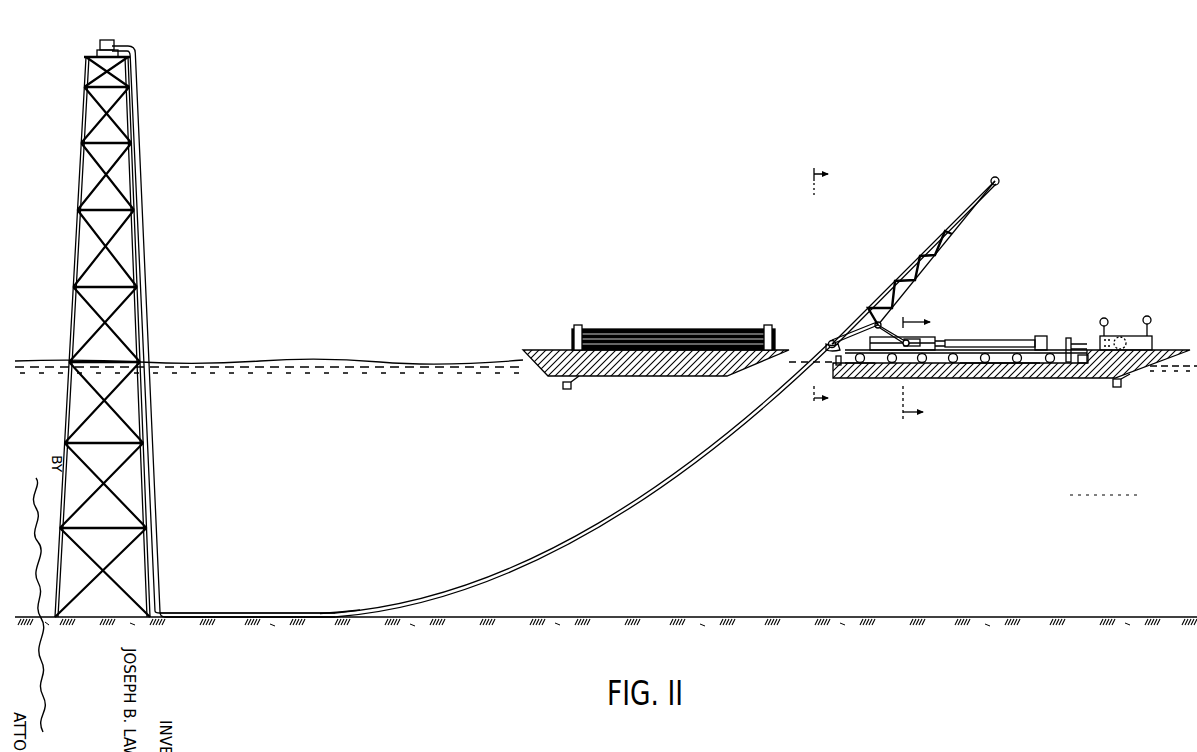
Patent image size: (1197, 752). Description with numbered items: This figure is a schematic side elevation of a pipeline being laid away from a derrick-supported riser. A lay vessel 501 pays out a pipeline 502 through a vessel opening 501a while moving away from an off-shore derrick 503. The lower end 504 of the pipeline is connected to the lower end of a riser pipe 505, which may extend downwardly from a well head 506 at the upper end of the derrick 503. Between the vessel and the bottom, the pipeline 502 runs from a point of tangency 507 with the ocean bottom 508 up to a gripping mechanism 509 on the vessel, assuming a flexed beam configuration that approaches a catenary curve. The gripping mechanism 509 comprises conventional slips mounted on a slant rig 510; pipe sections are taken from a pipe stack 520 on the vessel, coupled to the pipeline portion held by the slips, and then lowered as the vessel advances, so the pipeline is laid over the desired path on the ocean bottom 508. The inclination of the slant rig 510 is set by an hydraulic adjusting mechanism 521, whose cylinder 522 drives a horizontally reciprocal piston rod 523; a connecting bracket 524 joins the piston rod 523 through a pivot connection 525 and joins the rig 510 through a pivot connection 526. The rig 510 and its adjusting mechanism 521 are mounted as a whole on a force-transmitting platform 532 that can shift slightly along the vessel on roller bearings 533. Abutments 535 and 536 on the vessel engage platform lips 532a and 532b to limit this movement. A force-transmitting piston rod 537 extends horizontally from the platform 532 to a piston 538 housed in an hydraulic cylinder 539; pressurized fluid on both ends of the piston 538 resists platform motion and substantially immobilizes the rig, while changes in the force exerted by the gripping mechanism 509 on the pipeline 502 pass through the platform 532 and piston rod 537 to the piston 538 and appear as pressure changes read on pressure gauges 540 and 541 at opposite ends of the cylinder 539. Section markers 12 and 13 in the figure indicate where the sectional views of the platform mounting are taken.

The lay vessel 501 is at (652, 352).
The vessel opening 501a is at (762, 380).
The pipeline 502 is at (575, 537).
The off-shore derrick 503 is at (112, 208).
The lower end of the pipeline 504 is at (178, 615).
The riser pipe 505 is at (157, 466).
The well head 506 is at (114, 45).
The point of tangency 507 is at (313, 613).
The ocean bottom 508 is at (393, 626).
The gripping mechanism 509 is at (832, 340).
The slant rig 510 is at (905, 265).
The pipe stack 520 is at (687, 332).
The hydraulic adjusting mechanism 521 is at (963, 341).
The cylinder 522 is at (1020, 338).
The piston rod 523 is at (944, 345).
The connecting bracket 524 is at (908, 335).
The pivot connection 525 is at (910, 352).
The pivot connection 526 is at (877, 317).
The force-transmitting platform 532 is at (1003, 352).
The platform lip 532a is at (853, 366).
The platform lip 532b is at (1076, 368).
The roller bearings 533 is at (982, 367).
The abutment 535 is at (836, 368).
The abutment 536 is at (1088, 372).
The force-transmitting piston rod 537 is at (1068, 340).
The piston 538 is at (1122, 335).
The hydraulic cylinder 539 is at (1150, 342).
The pressure gauge 540 is at (1148, 316).
The pressure gauge 541 is at (1103, 318).
The section line 12 is at (813, 284).
The section line 13 is at (916, 359).